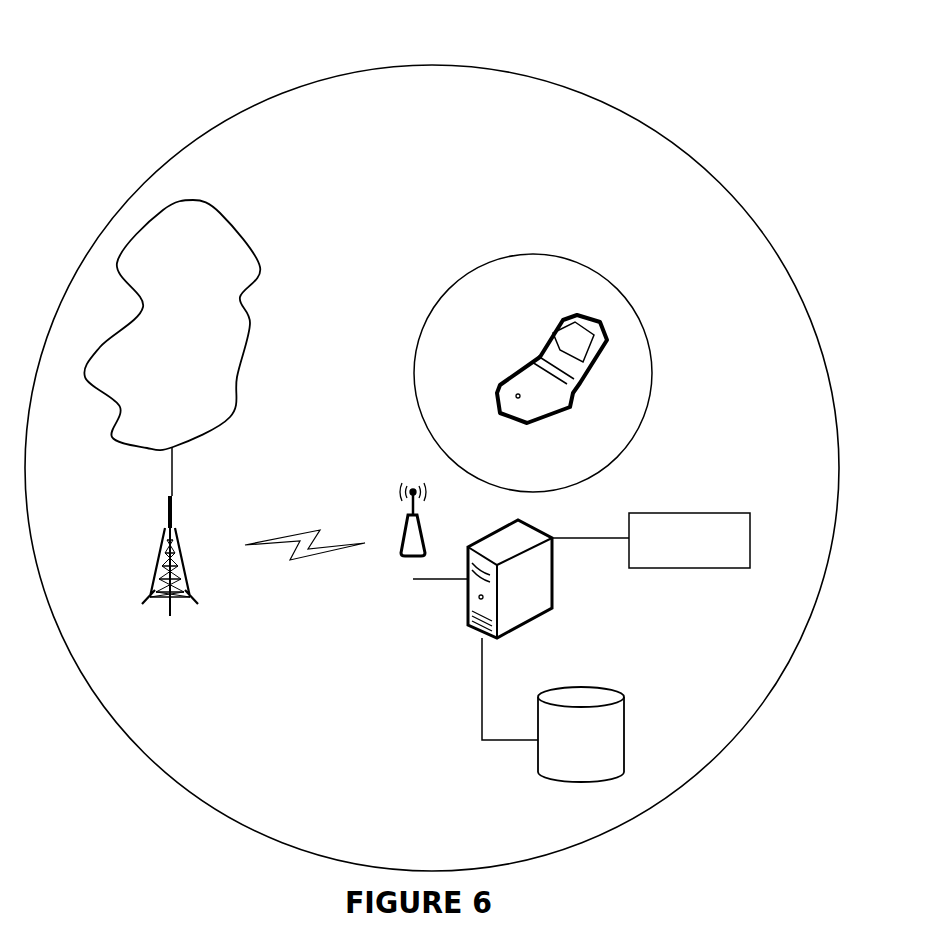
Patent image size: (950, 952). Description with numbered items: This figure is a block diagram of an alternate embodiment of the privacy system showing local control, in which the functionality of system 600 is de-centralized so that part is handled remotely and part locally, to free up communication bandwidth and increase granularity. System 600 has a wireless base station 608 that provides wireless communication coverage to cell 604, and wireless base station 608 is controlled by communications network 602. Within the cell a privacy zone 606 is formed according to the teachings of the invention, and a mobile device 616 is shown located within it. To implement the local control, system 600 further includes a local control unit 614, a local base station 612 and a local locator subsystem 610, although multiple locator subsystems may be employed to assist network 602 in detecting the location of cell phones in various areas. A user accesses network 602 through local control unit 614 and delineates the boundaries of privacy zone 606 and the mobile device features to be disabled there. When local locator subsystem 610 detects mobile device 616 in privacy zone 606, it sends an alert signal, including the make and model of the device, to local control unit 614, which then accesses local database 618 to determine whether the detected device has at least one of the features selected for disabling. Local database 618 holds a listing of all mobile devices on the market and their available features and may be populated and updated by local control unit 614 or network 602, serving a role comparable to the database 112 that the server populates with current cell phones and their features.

The system 600 is at (200, 80).
The cell 604 is at (432, 468).
The communications network 602 is at (172, 325).
The wireless base station 608 is at (170, 552).
The local base station 612 is at (413, 556).
The local control unit 614 is at (485, 599).
The local locator subsystem 610 is at (651, 540).
The local database 618 is at (553, 731).
The privacy zone 606 is at (519, 373).
The mobile device 616 is at (545, 369).
The database 112 is at (307, 735).